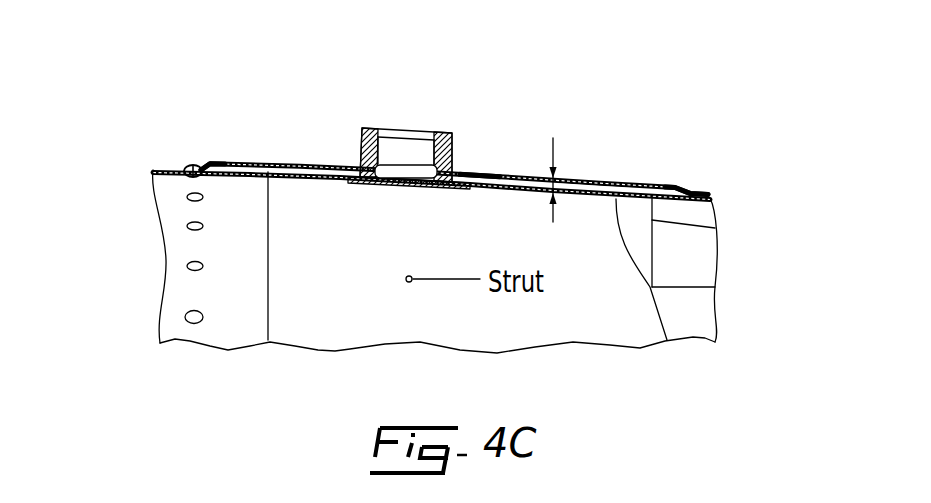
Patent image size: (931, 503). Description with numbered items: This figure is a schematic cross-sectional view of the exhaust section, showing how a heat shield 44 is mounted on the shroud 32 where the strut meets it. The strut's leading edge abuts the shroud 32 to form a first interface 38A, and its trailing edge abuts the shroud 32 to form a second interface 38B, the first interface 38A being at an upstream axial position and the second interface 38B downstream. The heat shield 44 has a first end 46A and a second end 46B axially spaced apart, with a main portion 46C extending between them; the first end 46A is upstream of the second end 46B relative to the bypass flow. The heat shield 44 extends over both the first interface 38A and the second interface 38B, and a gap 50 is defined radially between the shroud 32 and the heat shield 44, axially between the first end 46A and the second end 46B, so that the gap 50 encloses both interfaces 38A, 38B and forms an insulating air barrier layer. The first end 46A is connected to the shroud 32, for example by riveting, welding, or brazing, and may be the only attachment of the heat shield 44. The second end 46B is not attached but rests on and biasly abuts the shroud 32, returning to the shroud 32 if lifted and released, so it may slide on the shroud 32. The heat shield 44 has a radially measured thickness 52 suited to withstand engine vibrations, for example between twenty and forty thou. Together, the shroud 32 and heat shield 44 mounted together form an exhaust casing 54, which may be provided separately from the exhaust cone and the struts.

The shroud 32 is at (307, 165).
The first interface 38A is at (258, 183).
The second interface 38B is at (619, 200).
The heat shield 44 is at (534, 177).
The first end 46A is at (182, 167).
The second end 46B is at (690, 189).
The main portion 46C is at (485, 176).
The gap 50 is at (572, 189).
The thickness 52 is at (553, 150).
The exhaust casing 54 is at (190, 150).